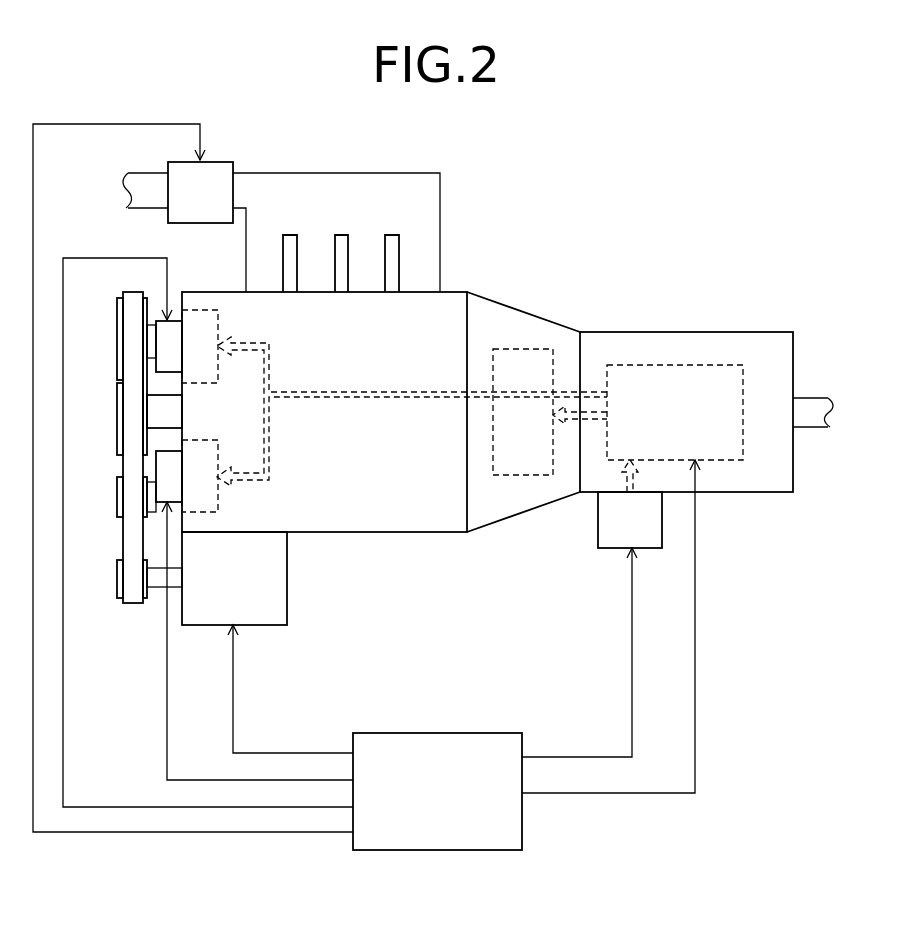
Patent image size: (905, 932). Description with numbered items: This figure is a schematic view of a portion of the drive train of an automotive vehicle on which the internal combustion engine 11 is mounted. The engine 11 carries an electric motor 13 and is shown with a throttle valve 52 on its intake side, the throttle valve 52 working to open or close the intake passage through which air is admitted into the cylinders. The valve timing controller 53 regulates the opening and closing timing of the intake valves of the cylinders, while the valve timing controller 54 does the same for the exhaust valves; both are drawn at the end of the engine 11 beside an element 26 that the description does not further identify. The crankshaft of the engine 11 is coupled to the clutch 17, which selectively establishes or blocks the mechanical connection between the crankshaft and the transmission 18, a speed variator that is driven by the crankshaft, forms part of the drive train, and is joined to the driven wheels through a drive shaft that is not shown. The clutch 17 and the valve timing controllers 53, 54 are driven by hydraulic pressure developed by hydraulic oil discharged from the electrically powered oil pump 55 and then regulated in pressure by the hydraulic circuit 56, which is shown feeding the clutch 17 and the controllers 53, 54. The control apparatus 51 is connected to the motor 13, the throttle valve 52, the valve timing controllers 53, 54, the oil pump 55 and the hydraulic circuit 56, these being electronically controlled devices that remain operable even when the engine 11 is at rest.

The internal combustion engine 11 is at (430, 532).
The electric motor 13 is at (287, 588).
The clutch 17 is at (522, 349).
The transmission 18 is at (745, 332).
The clutch 26 is at (132, 593).
The control apparatus 51 is at (380, 733).
The throttle valve 52 is at (222, 160).
The valve timing controller 53 is at (168, 344).
The valve timing controller 54 is at (168, 471).
The electrically powered oil pump 55 is at (598, 530).
The hydraulic circuit 56 is at (678, 365).